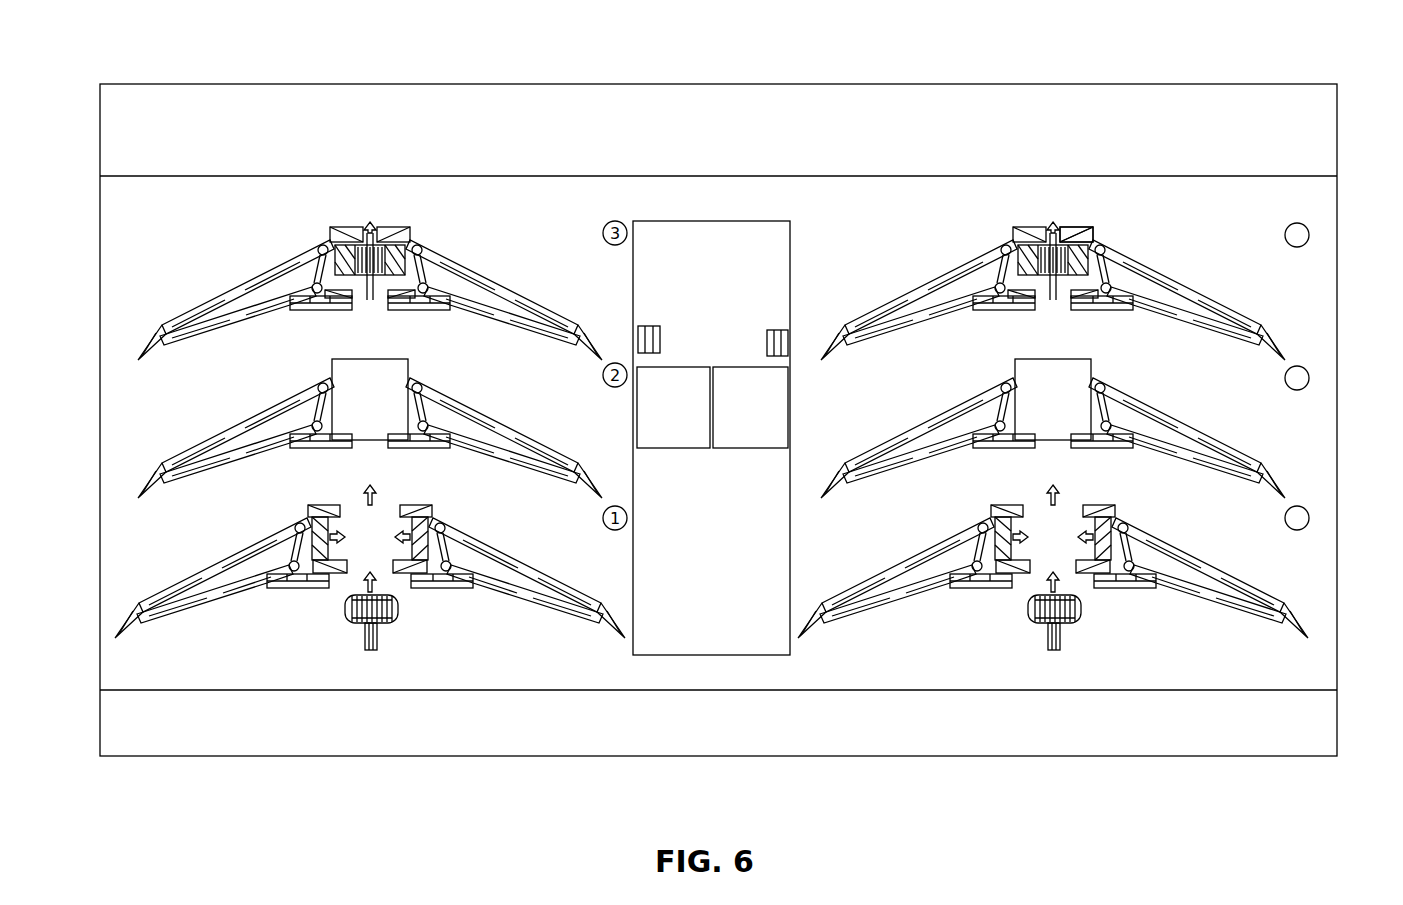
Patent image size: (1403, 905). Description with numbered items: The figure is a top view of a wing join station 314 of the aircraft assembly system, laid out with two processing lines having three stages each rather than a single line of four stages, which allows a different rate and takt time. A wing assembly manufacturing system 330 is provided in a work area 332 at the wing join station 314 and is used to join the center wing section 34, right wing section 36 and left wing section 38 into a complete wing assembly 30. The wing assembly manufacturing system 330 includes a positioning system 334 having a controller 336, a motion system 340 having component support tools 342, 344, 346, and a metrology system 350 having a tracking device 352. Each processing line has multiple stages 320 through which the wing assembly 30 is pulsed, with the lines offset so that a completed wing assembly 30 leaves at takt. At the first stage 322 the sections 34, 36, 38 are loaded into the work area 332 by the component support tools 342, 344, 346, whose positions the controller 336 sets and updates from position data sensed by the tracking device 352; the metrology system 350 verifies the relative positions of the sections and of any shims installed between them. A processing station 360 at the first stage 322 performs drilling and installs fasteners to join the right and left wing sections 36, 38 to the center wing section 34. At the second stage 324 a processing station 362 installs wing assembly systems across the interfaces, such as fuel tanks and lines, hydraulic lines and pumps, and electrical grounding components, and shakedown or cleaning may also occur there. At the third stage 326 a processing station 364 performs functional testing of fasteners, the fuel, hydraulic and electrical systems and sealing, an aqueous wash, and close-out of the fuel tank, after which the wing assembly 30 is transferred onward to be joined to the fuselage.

The wing join station 314 is at (162, 80).
The wing assembly manufacturing system 330 is at (1098, 334).
The work area 332 is at (165, 176).
The metrology system 350 is at (327, 382).
The stages 320 is at (163, 280).
The wing assembly 30 is at (433, 236).
The positioning system 334 is at (744, 312).
The controller 336 is at (680, 450).
The tracking device 352 is at (1309, 231).
The third stage 326 is at (1120, 283).
The second stage 324 is at (1109, 438).
The first stage 322 is at (1098, 571).
The component support tool 342 is at (1045, 231).
The motion system 340 is at (338, 652).
The processing station 364 is at (1087, 224).
The component support tool 344 is at (1104, 252).
The processing station 362 is at (1100, 360).
The component support tool 346 is at (1000, 394).
The processing station 360 is at (1120, 517).
The left wing section 38 is at (238, 596).
The right wing section 36 is at (500, 596).
The center wing section 34 is at (388, 632).